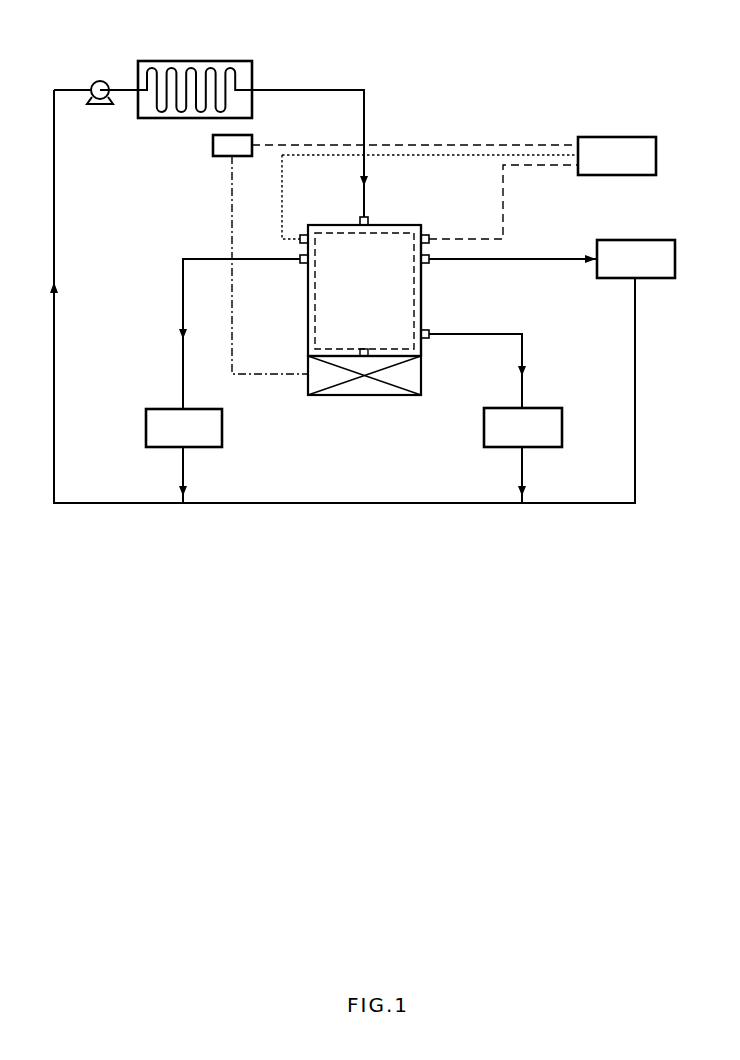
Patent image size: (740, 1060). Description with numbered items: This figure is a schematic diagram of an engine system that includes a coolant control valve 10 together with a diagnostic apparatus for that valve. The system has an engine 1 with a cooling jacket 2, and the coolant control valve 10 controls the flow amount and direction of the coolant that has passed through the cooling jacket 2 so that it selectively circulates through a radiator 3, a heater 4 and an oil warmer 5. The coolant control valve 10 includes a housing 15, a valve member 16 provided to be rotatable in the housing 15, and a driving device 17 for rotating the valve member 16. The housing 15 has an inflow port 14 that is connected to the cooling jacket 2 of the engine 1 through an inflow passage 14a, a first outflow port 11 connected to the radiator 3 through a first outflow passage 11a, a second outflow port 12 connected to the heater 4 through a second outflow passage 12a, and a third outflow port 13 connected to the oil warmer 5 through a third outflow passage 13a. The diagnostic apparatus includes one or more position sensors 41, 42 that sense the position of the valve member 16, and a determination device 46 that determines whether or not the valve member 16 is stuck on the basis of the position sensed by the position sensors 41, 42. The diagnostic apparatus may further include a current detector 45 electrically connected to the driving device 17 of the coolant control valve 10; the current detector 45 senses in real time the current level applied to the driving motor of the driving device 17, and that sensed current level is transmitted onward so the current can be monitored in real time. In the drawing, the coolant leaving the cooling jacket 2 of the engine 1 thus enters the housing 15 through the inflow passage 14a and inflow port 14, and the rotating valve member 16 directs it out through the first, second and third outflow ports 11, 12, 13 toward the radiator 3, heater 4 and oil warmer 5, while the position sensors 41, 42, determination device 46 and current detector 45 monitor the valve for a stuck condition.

The engine 1 is at (233, 61).
The cooling jacket 2 is at (190, 61).
The radiator 3 is at (634, 240).
The heater 4 is at (562, 427).
The oil warmer 5 is at (146, 427).
The coolant control valve 10 is at (512, 288).
The first outflow port 11 is at (431, 262).
The first outflow passage 11a is at (566, 258).
The second outflow port 12 is at (429, 340).
The second outflow passage 12a is at (523, 348).
The third outflow port 13 is at (300, 261).
The third outflow passage 13a is at (183, 358).
The inflow port 14 is at (368, 217).
The inflow passage 14a is at (344, 89).
The housing 15 is at (422, 308).
The valve member 16 is at (316, 328).
The driving device 17 is at (363, 397).
The position sensor 41 is at (429, 236).
The position sensor 42 is at (301, 235).
The current detector 45 is at (213, 145).
The determination device 46 is at (616, 137).